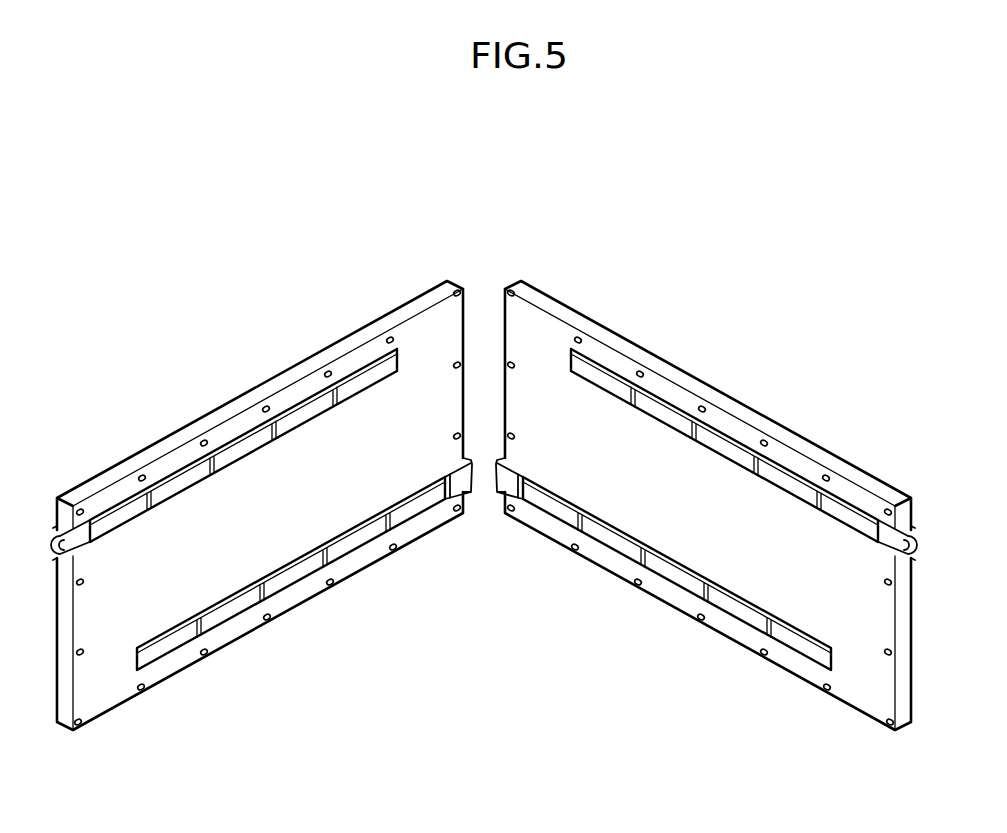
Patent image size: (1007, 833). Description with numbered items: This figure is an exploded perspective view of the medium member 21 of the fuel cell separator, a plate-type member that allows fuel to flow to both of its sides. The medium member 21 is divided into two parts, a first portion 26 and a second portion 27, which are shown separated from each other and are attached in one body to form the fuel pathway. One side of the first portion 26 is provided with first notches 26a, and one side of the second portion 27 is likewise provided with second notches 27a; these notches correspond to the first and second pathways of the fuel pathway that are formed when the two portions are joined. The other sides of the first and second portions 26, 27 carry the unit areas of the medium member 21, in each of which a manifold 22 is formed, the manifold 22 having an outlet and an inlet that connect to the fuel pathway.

The medium member 21 is at (541, 679).
The manifold 22 is at (285, 428).
The first portion 26 is at (290, 613).
The first notches 26a is at (372, 372).
The second portion 27 is at (668, 610).
The second notches 27a is at (660, 408).